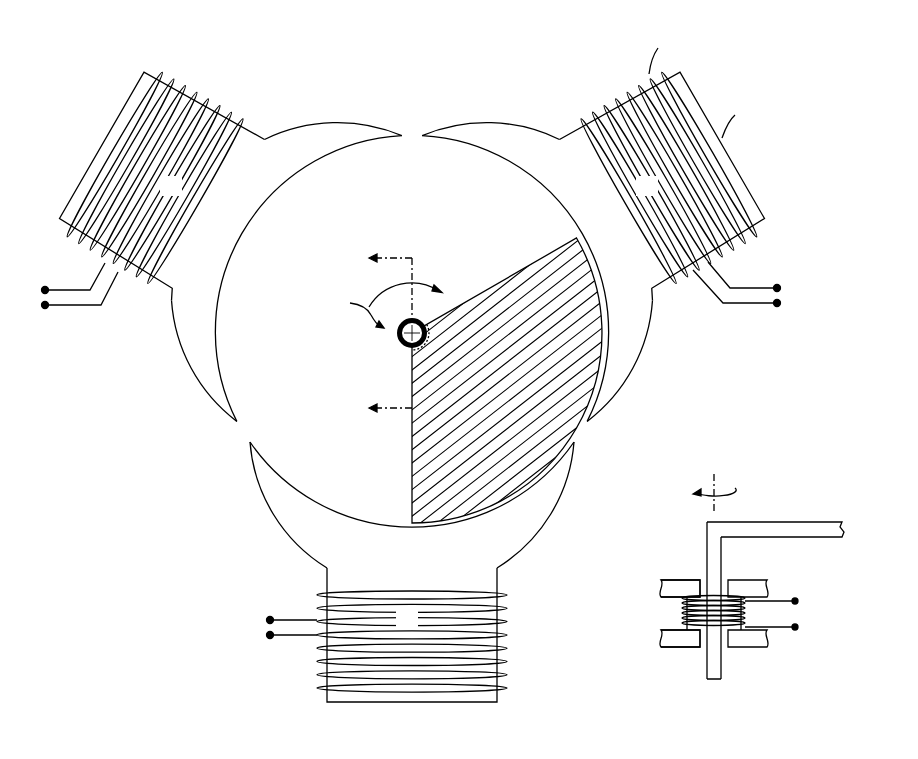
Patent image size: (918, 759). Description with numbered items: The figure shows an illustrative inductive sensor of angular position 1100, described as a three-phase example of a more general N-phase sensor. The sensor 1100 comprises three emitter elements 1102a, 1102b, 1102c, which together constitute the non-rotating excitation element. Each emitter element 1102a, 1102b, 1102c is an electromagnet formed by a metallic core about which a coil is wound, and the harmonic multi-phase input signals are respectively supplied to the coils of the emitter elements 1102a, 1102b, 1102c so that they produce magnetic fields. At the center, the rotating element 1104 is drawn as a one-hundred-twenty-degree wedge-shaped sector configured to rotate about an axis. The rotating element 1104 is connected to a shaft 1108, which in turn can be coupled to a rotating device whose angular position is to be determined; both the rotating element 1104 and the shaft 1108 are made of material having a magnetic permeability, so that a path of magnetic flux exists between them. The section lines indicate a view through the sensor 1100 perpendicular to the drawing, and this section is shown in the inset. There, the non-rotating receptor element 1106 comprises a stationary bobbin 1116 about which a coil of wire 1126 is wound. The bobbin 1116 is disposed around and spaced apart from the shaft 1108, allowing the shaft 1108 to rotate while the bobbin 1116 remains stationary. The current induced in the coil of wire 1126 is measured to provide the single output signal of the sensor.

The inductive sensor of angular position 1100 is at (558, 47).
The emitter element 1102a is at (645, 356).
The emitter element 1102b is at (559, 509).
The emitter element 1102c is at (334, 121).
The rotating element 1104 is at (525, 268).
The non-rotating receptor element 1106 is at (398, 336).
The shaft 1108 is at (722, 547).
The stationary bobbin 1116 is at (682, 647).
The coil of wire 1126 is at (682, 607).